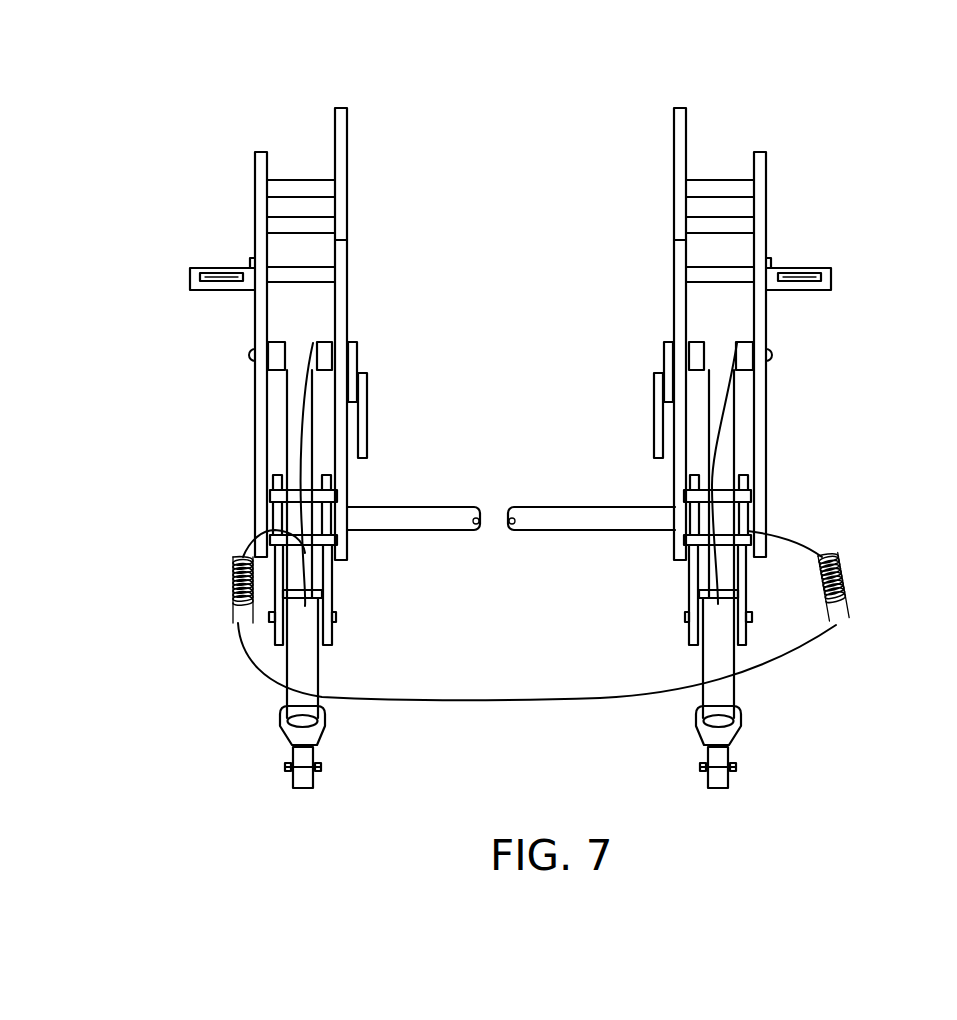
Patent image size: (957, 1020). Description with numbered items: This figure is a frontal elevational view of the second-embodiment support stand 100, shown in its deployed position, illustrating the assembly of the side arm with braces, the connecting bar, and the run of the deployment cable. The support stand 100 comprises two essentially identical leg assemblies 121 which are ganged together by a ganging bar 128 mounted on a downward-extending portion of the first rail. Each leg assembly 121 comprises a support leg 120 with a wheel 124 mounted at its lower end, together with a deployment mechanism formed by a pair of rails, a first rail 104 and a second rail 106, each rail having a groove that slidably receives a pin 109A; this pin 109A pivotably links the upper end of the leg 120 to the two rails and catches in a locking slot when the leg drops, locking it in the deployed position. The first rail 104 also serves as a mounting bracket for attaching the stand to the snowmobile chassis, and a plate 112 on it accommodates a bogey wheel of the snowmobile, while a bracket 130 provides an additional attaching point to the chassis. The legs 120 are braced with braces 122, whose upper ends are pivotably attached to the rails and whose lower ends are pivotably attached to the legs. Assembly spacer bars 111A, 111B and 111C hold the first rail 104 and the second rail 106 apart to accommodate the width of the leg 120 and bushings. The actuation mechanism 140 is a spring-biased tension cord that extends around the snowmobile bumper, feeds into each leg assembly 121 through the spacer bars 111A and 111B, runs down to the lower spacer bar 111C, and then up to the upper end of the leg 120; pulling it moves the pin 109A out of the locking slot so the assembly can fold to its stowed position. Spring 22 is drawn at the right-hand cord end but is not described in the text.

The support stand 100 is at (497, 147).
The leg assembly 121 is at (235, 143).
The second rail 106 is at (258, 198).
The first rail 104 is at (341, 200).
The bracket 130 is at (233, 270).
The pin 109A is at (248, 356).
The plate 112 is at (662, 420).
The support leg 120 is at (296, 422).
The actuation mechanism 140 is at (300, 448).
The assembly spacer bar 111A is at (752, 492).
The assembly spacer bar 111B is at (752, 533).
The lower assembly spacer bar 111C is at (712, 594).
The brace 122 is at (275, 637).
The right tension spring 22 is at (704, 642).
The ganging bar 128 is at (594, 518).
The wheel 124 is at (724, 778).